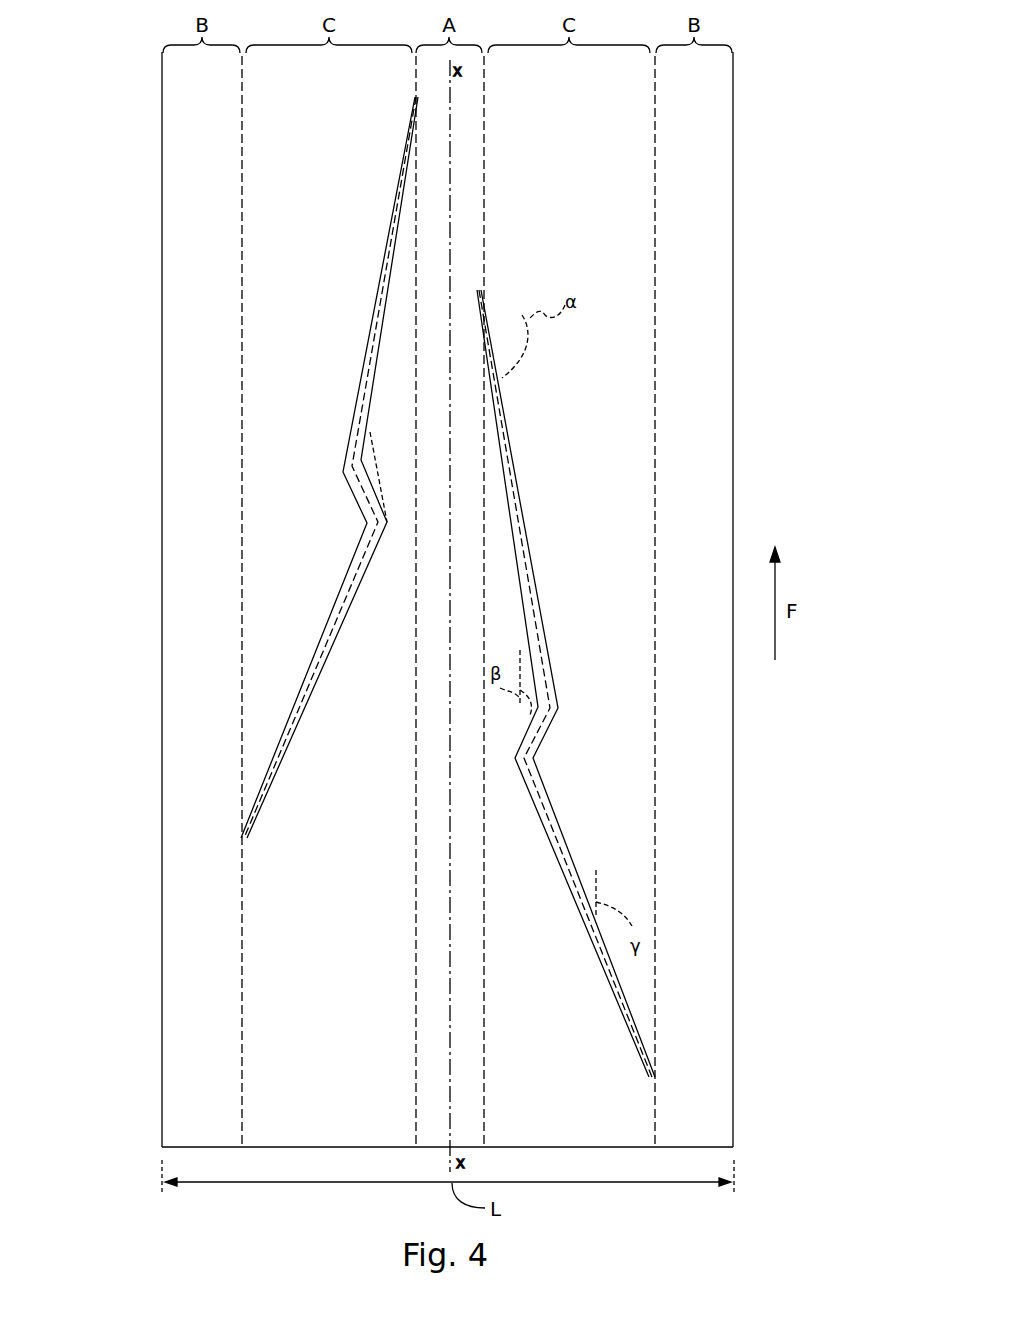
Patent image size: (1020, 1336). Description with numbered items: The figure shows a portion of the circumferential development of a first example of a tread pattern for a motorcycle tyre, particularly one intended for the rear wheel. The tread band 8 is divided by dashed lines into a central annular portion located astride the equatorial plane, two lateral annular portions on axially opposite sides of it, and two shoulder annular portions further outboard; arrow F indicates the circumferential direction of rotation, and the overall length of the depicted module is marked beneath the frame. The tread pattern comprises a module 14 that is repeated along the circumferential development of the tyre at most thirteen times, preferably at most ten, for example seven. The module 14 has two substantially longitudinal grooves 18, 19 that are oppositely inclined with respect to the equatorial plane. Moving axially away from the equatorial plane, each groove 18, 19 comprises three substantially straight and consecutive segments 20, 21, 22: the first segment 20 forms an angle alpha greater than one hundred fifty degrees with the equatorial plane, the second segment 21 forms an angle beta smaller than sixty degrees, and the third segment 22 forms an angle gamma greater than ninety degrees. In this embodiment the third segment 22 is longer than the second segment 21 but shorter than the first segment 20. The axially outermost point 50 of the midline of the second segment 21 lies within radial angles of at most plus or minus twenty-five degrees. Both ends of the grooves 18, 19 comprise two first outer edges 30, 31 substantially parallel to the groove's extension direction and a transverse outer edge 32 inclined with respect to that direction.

The module 14 is at (143, 176).
The tread band 8 is at (320, 126).
The longitudinal groove 18 is at (533, 530).
The longitudinal groove 19 is at (354, 368).
The first segment 20 is at (395, 185).
The second segment 21 is at (352, 497).
The third segment 22 is at (290, 746).
The first outer edge 30 is at (478, 380).
The first outer edge 31 is at (486, 356).
The transverse outer edge 32 is at (480, 318).
The axially outermost point 50 is at (340, 472).